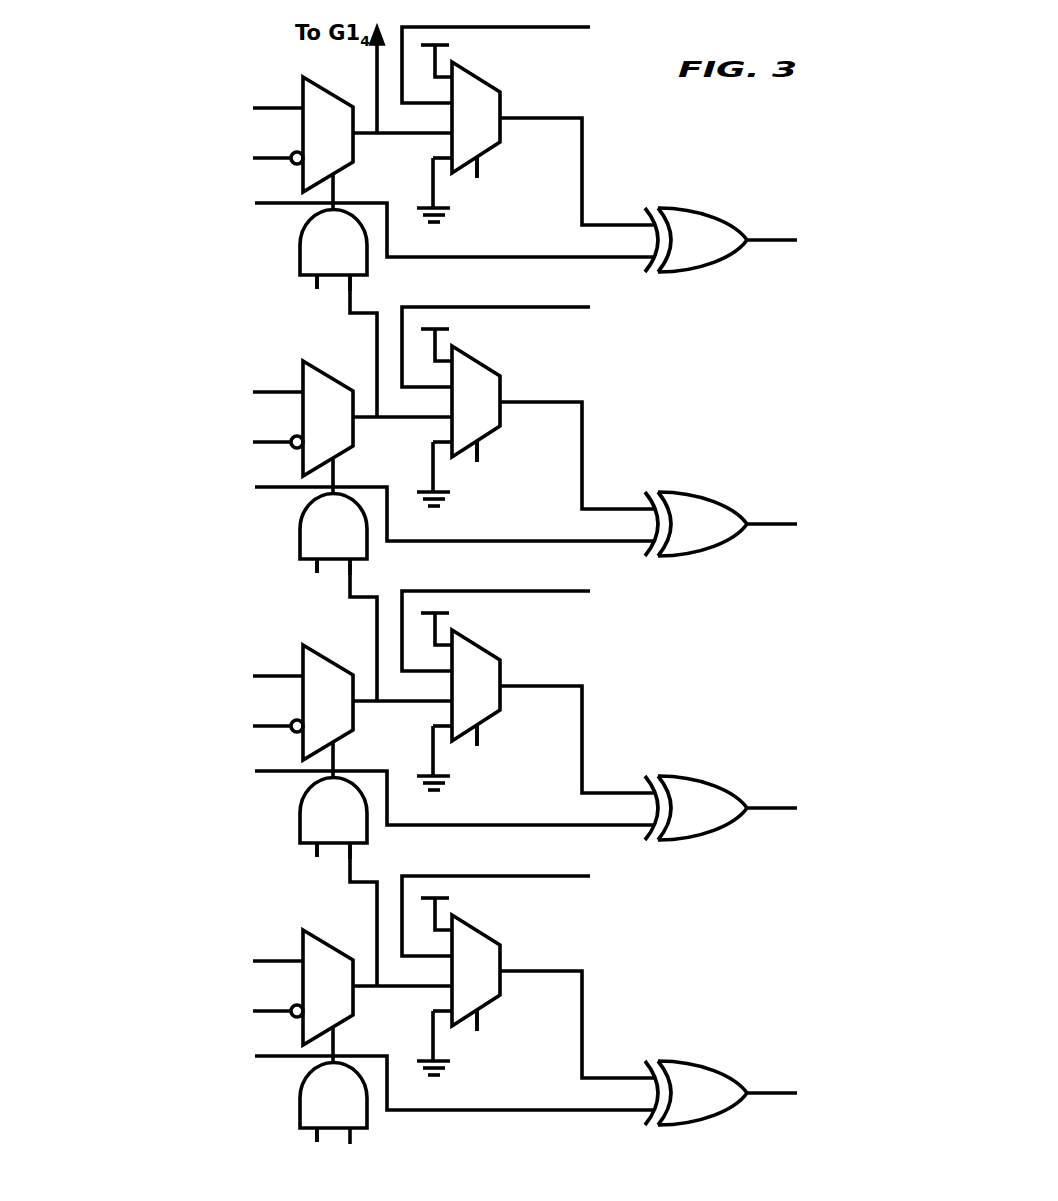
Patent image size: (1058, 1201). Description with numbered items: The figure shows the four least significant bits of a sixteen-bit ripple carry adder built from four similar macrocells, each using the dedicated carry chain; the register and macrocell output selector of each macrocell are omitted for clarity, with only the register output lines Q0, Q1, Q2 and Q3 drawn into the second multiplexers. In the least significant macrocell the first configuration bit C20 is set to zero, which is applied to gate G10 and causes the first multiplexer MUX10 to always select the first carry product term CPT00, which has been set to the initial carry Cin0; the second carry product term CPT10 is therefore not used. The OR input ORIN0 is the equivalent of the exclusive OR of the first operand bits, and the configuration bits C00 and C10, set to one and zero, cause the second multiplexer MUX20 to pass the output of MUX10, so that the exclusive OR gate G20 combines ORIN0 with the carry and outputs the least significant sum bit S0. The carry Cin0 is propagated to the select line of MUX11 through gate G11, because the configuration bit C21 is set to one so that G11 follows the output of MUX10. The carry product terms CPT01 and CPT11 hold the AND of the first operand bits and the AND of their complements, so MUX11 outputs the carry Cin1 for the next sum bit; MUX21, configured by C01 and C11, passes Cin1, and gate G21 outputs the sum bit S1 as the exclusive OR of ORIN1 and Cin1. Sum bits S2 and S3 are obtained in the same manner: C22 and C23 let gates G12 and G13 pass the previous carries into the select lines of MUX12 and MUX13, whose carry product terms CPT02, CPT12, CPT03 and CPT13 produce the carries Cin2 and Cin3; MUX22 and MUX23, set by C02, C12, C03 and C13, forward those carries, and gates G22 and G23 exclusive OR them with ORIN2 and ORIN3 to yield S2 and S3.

The first multiplexer of bit 3 MUX13 is at (367, 129).
The second multiplexer of bit 3 MUX23 is at (536, 133).
The AND gate of bit 3 G13 is at (313, 250).
The XOR gate of bit 3 G23 is at (696, 256).
The carry in of bit 3 Cin3 is at (397, 97).
The first configuration bit of bit 3 C23 is at (319, 299).
The configuration bit C0 of bit 3 C03 is at (473, 183).
The configuration bit C1 of bit 3 C13 is at (534, 183).
The sum bit 3 S3 is at (772, 225).
The register output of bit 3 Q3 is at (526, 56).
The first carry propagate term of bit 3 CPT03 is at (206, 111).
The second carry propagate term of bit 3 CPT13 is at (203, 158).
The OR input of bit 3 ORIN3 is at (335, 224).
The first multiplexer of bit 2 MUX12 is at (367, 413).
The second multiplexer of bit 2 MUX22 is at (536, 417).
The AND gate of bit 2 G12 is at (313, 534).
The XOR gate of bit 2 G22 is at (696, 540).
The carry in of bit 2 Cin2 is at (386, 363).
The first configuration bit of bit 2 C22 is at (319, 583).
The configuration bit C0 of bit 2 C02 is at (473, 467).
The configuration bit C1 of bit 2 C12 is at (534, 467).
The sum bit 2 S2 is at (772, 509).
The register output of bit 2 Q2 is at (526, 336).
The first carry propagate term of bit 2 CPT02 is at (206, 395).
The second carry propagate term of bit 2 CPT12 is at (203, 442).
The OR input of bit 2 ORIN2 is at (335, 508).
The first multiplexer of bit 1 MUX11 is at (367, 697).
The second multiplexer of bit 1 MUX21 is at (536, 701).
The AND gate of bit 1 G11 is at (313, 818).
The XOR gate of bit 1 G21 is at (696, 824).
The carry in of bit 1 Cin1 is at (386, 647).
The first configuration bit of bit 1 C21 is at (319, 867).
The configuration bit C0 of bit 1 C01 is at (473, 751).
The configuration bit C1 of bit 1 C11 is at (534, 751).
The sum bit 1 S1 is at (772, 793).
The register output of bit 1 Q1 is at (526, 620).
The first carry propagate term of bit 1 CPT01 is at (206, 679).
The second carry propagate term of bit 1 CPT11 is at (203, 726).
The OR input of bit 1 ORIN1 is at (335, 792).
The first multiplexer of bit 0 MUX10 is at (367, 982).
The second multiplexer of bit 0 MUX20 is at (536, 986).
The AND gate of bit 0 G10 is at (313, 1103).
The XOR gate of bit 0 G20 is at (696, 1109).
The initial carry in Cin0 is at (387, 932).
The first configuration bit of bit 0 C20 is at (319, 1152).
The configuration bit C0 of bit 0 C00 is at (473, 1036).
The configuration bit C1 of bit 0 C10 is at (534, 1036).
The least significant sum bit S0 is at (772, 1078).
The register output of bit 0 Q0 is at (526, 905).
The first carry propagate term of bit 0 CPT00 is at (212, 964).
The second carry propagate term of bit 0 CPT10 is at (185, 1011).
The OR input of bit 0 ORIN0 is at (335, 1077).